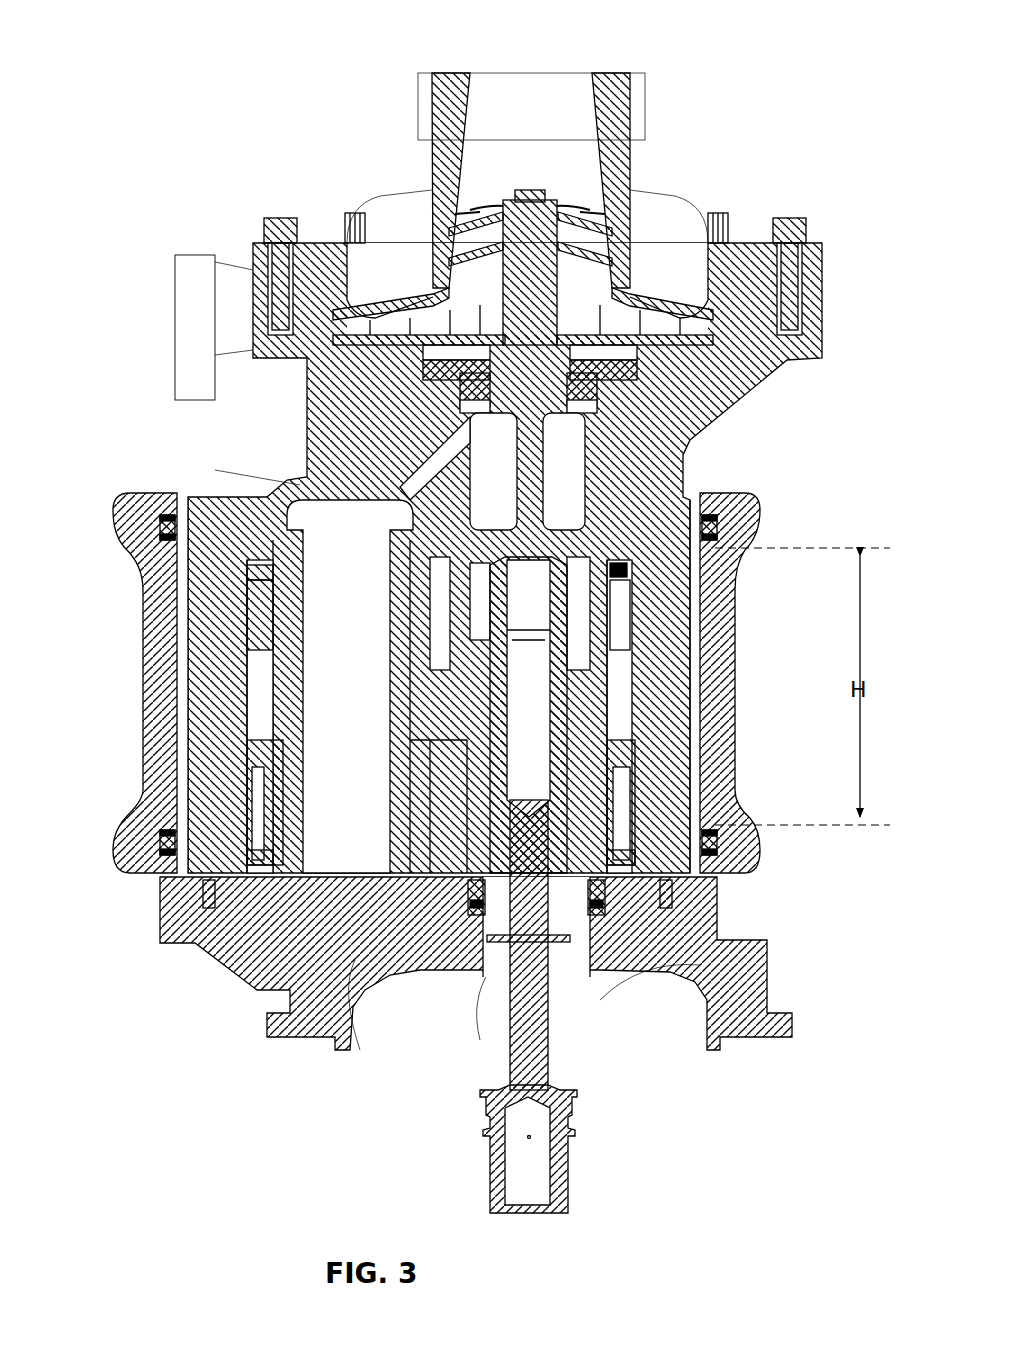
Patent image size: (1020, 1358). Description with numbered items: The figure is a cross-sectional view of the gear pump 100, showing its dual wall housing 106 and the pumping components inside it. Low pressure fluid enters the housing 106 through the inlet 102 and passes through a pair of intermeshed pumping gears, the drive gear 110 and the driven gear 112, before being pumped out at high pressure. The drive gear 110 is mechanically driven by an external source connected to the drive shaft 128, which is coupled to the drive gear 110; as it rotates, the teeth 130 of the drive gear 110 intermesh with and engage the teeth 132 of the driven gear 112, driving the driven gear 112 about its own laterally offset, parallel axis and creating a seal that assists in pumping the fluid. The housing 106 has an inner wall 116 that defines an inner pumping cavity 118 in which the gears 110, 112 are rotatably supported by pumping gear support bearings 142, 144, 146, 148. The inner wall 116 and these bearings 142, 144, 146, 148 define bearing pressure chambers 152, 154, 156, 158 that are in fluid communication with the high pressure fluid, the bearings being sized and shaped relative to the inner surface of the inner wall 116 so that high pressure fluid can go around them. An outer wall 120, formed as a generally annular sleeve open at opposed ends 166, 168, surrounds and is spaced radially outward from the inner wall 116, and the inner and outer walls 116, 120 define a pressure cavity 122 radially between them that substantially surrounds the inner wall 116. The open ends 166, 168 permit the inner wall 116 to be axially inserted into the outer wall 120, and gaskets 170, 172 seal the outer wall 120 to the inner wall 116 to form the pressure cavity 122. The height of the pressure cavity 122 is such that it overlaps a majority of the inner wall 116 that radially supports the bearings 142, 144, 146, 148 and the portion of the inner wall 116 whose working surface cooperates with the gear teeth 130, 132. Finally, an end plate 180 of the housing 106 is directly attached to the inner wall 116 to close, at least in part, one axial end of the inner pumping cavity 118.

The gear pump 100 is at (230, 30).
The inlet 102 is at (560, 440).
The housing 106 is at (230, 425).
The drive gear 110 is at (600, 710).
The driven gear 112 is at (290, 712).
The inner wall 116 is at (217, 753).
The inner pumping cavity 118 is at (340, 512).
The outer wall 120 is at (150, 667).
The pressure cavity 122 is at (180, 636).
The drive shaft 128 is at (568, 1175).
The teeth of the drive gear 130 is at (440, 720).
The teeth of the driven gear 132 is at (400, 710).
The pumping gear support bearing 142 is at (612, 577).
The pumping gear support bearing 144 is at (628, 835).
The pumping gear support bearing 146 is at (277, 782).
The pumping gear support bearing 148 is at (255, 590).
The bearing pressure chamber 152 is at (633, 608).
The bearing pressure chamber 154 is at (625, 790).
The bearing pressure chamber 156 is at (253, 828).
The bearing pressure chamber 158 is at (250, 613).
The open end of outer wall 166 is at (735, 498).
The open end of outer wall 168 is at (760, 888).
The gasket 170 is at (158, 526).
The gasket 172 is at (158, 857).
The end plate 180 is at (755, 975).